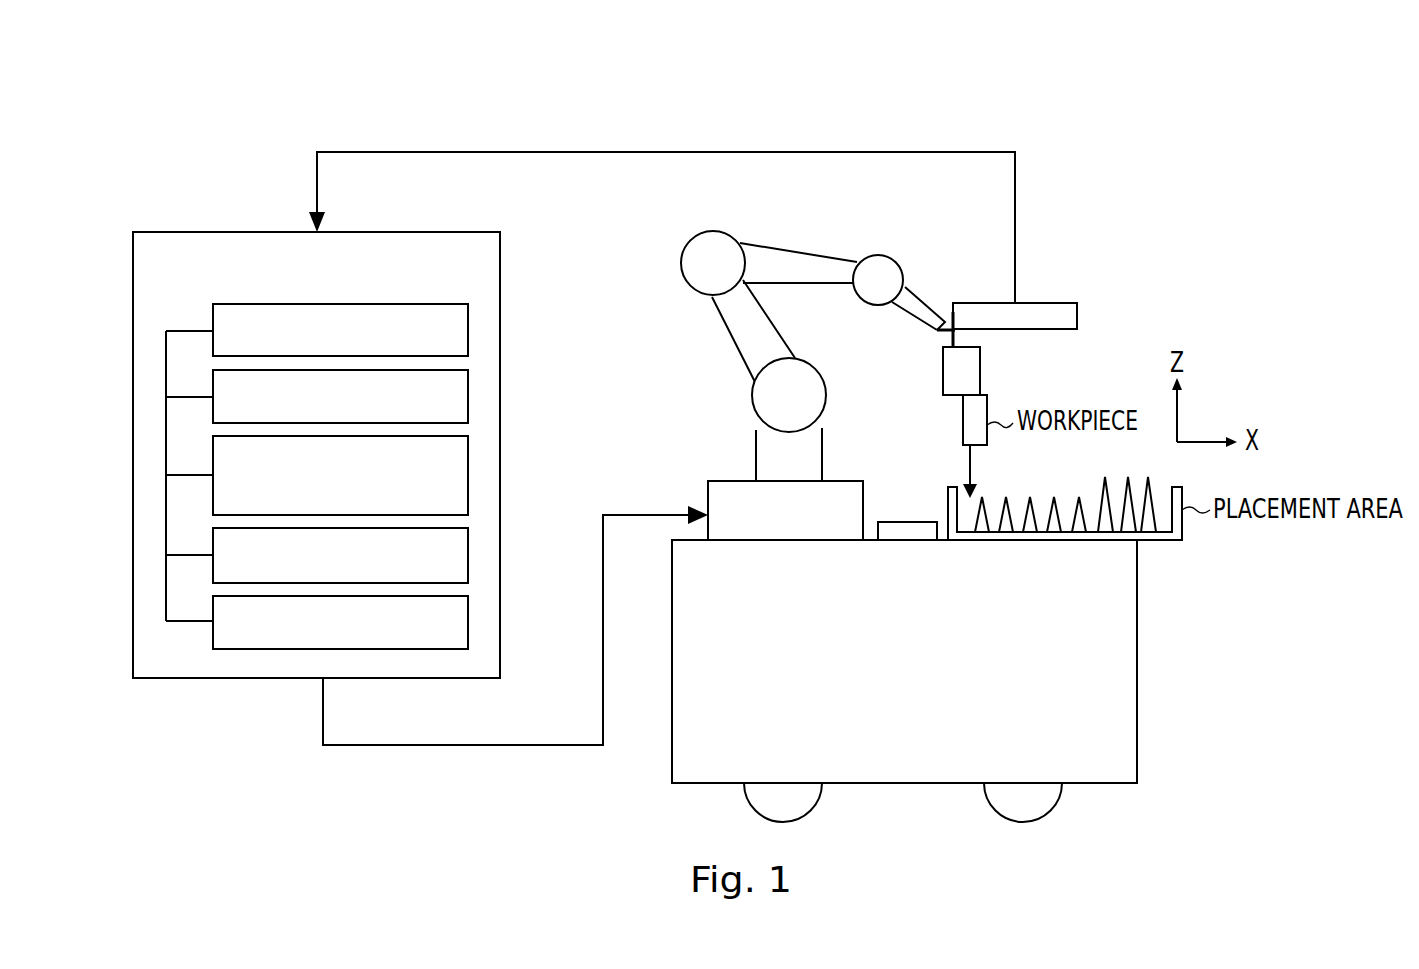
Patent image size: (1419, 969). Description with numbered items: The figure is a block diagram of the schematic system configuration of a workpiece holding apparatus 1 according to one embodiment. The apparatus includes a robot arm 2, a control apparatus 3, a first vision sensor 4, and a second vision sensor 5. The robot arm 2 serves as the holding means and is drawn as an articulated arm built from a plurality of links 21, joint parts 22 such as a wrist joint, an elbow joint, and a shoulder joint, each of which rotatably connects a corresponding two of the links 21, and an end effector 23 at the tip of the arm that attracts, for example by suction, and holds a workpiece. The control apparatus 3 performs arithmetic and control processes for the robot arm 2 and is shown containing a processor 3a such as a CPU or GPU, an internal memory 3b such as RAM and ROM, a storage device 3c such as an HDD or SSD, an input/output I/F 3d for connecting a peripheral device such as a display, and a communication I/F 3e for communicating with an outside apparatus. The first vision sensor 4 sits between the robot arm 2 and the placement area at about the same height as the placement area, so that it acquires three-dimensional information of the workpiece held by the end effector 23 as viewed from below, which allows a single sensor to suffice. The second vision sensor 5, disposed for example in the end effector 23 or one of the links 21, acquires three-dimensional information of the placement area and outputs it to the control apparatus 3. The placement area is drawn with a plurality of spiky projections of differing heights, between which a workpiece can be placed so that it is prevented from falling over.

The workpiece holding apparatus 1 is at (367, 76).
The robot arm 2 is at (668, 228).
The control apparatus 3 is at (453, 232).
The processor 3a is at (468, 331).
The internal memory 3b is at (468, 397).
The storage device 3c is at (468, 475).
The input/output I/F 3d is at (468, 555).
The communication I/F 3e is at (468, 621).
The first vision sensor 4 is at (892, 523).
The second vision sensor 5 is at (1077, 316).
The links 21 is at (785, 260).
The joint parts 22 is at (888, 262).
The end effector 23 is at (980, 370).